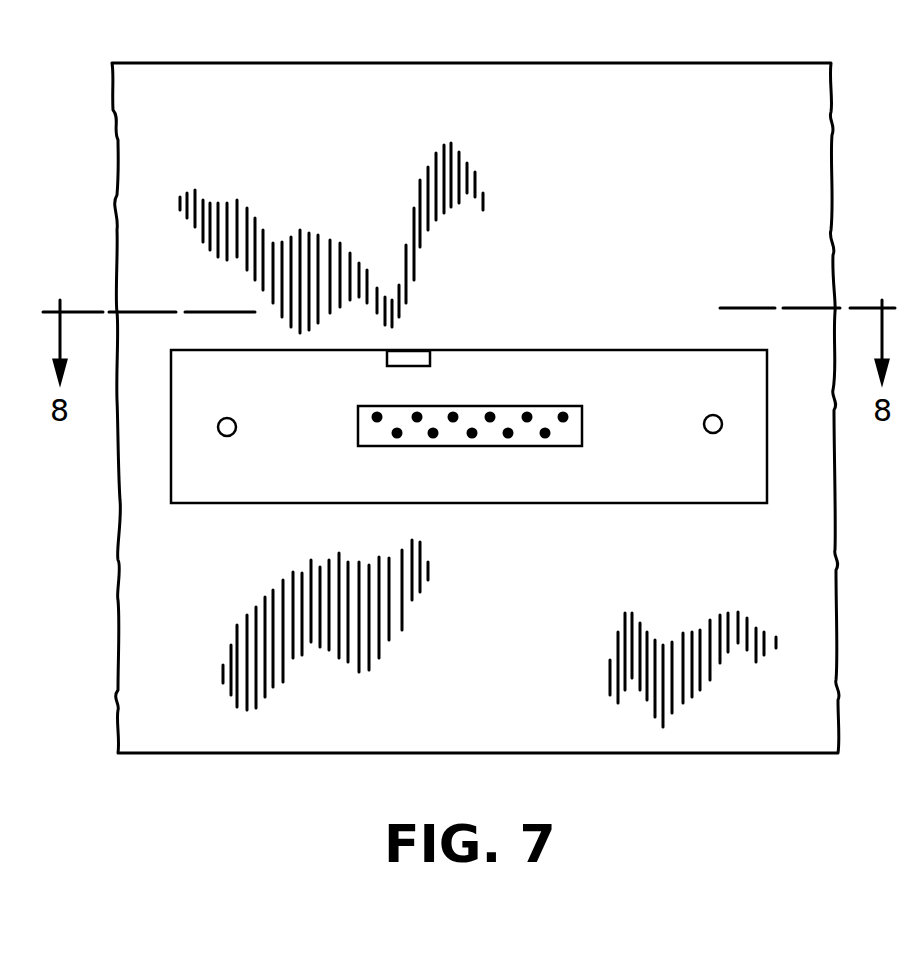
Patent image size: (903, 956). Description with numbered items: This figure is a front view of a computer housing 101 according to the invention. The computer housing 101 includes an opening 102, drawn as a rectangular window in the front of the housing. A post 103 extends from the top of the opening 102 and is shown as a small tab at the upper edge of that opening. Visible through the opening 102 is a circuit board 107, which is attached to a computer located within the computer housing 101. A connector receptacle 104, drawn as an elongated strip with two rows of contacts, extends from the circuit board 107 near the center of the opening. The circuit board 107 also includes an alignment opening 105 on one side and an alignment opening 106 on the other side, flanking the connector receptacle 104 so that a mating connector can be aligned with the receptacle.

The computer housing 101 is at (732, 143).
The opening 102 is at (627, 367).
The post 103 is at (430, 360).
The connector receptacle 104 is at (528, 446).
The alignment opening 105 is at (228, 436).
The alignment opening 106 is at (714, 433).
The circuit board 107 is at (676, 478).